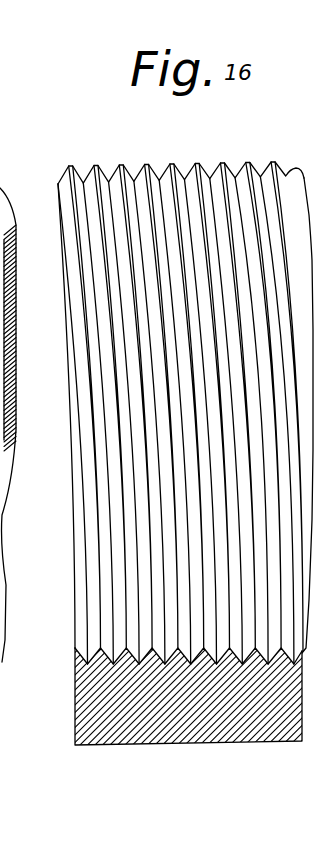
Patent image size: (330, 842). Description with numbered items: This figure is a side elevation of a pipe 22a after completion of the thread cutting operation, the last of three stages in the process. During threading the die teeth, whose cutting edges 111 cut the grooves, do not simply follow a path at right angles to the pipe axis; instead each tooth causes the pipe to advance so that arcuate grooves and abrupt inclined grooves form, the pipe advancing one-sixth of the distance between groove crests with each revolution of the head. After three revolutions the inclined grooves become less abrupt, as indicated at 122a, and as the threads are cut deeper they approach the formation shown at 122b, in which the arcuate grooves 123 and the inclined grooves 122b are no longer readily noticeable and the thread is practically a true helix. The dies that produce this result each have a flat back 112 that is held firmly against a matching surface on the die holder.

The arcuate grooves 123 is at (148, 165).
The less abrupt inclined grooves 122a is at (3, 277).
The inclined grooves 122b is at (120, 290).
The pipe 22a is at (72, 493).
The cutting edges 111 is at (3, 670).
The back of the die 112 is at (218, 715).